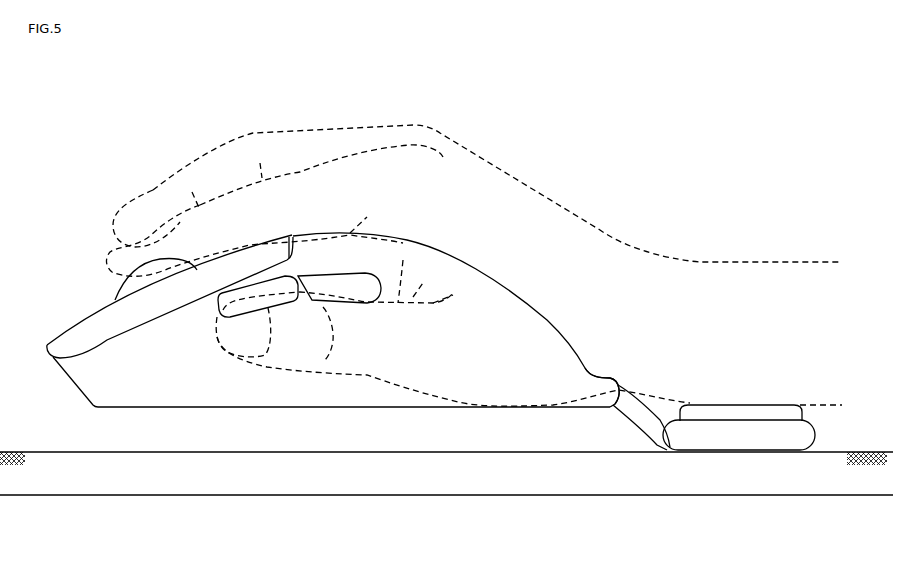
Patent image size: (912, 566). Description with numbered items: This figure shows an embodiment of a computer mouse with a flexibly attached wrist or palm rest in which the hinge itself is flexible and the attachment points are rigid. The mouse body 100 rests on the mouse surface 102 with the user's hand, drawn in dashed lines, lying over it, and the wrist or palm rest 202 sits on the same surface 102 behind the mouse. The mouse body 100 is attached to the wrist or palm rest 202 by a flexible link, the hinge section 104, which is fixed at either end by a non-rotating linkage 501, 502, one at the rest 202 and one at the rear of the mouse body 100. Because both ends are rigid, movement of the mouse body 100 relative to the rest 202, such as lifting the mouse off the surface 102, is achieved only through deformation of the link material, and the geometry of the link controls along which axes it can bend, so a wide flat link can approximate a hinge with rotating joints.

The mouse body 100 is at (123, 379).
The mouse surface 102 is at (294, 474).
The hinge section 104 is at (642, 413).
The wrist or palm rest 202 is at (742, 439).
The non-rotating linkage 501 is at (675, 437).
The non-rotating linkage 502 is at (600, 398).